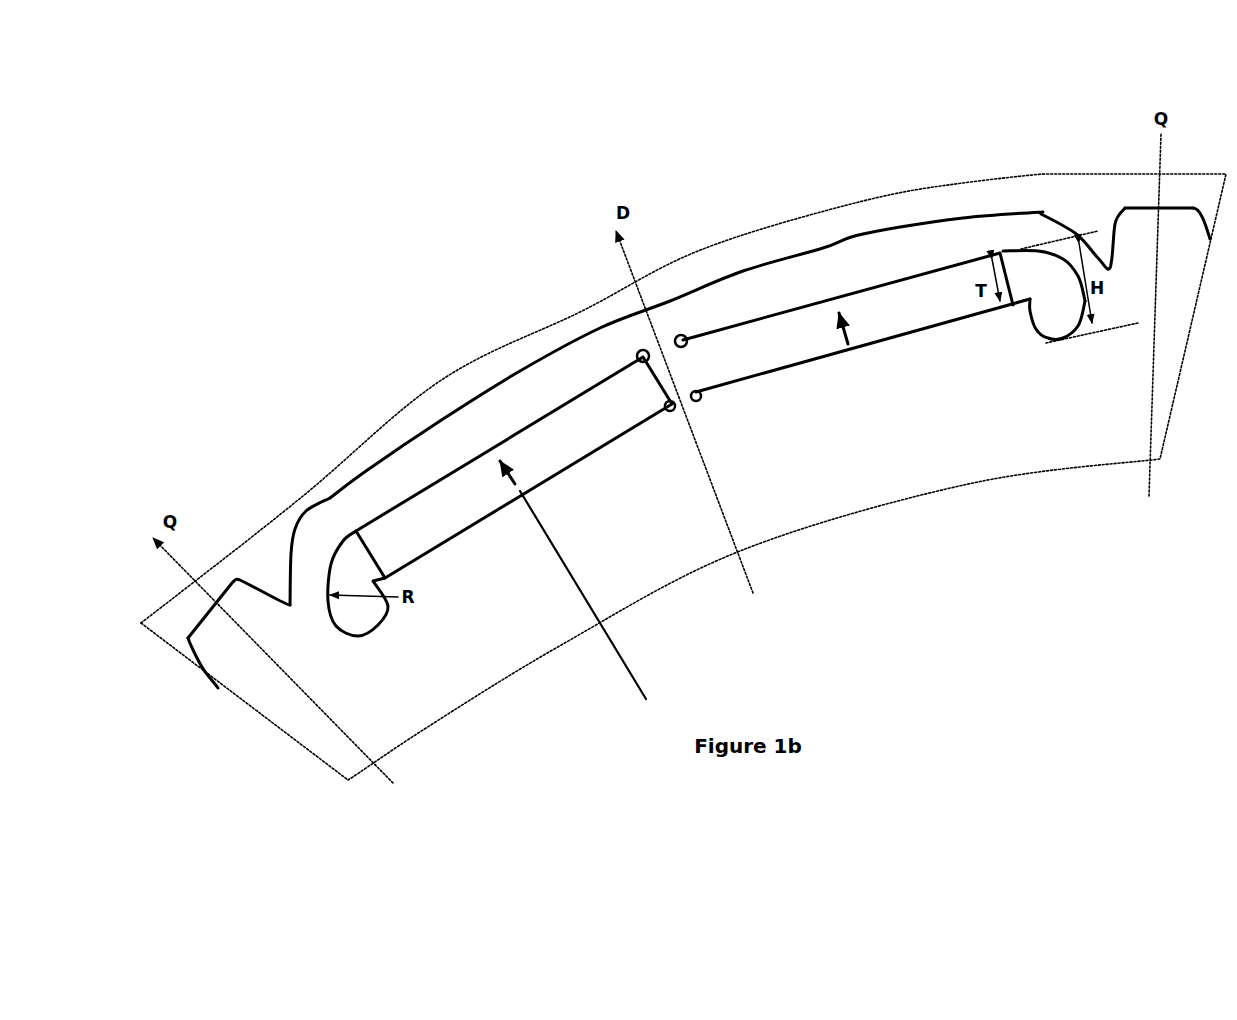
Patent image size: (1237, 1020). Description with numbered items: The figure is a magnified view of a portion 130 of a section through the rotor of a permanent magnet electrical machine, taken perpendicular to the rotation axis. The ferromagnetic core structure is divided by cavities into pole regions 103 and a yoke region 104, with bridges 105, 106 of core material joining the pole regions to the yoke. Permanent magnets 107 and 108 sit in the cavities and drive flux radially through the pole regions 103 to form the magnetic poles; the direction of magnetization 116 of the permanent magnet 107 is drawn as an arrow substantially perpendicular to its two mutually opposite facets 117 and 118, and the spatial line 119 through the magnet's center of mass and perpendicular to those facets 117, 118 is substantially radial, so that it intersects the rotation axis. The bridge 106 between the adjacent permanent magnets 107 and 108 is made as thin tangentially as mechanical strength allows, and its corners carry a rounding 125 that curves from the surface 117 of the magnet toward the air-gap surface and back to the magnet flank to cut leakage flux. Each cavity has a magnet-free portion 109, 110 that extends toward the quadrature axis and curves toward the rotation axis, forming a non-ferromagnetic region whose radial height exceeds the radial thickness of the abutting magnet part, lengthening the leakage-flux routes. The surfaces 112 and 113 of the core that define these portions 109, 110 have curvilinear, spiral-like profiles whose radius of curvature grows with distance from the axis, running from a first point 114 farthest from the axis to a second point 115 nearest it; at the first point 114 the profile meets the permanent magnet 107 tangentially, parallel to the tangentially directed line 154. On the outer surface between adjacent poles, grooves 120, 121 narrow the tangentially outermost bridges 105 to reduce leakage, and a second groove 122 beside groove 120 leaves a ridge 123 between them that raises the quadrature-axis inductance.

The pole region 103 is at (686, 355).
The yoke region 104 is at (592, 398).
The bridge 105 is at (303, 533).
The bridge 106 is at (662, 348).
The permanent magnet 107 is at (515, 467).
The permanent magnet 108 is at (852, 327).
The portion of cavity 109 is at (343, 575).
The portion of cavity 110 is at (1046, 305).
The surface of ferromagnetic core structure 112 is at (336, 614).
The surface of ferromagnetic core structure 113 is at (1068, 286).
The first point of profile 114 is at (346, 527).
The second point of profile 115 is at (372, 637).
The direction of magnetization 116 is at (513, 472).
The facet of permanent magnet 117 is at (496, 439).
The facet of permanent magnet 118 is at (527, 493).
The spatial line 119 is at (619, 655).
The groove 120 is at (278, 579).
The groove 121 is at (1090, 215).
The groove 122 is at (183, 653).
The ridge 123 is at (1140, 220).
The rounding 125 is at (634, 355).
The portion 130 is at (900, 522).
The tangentially directed line 154 is at (312, 537).